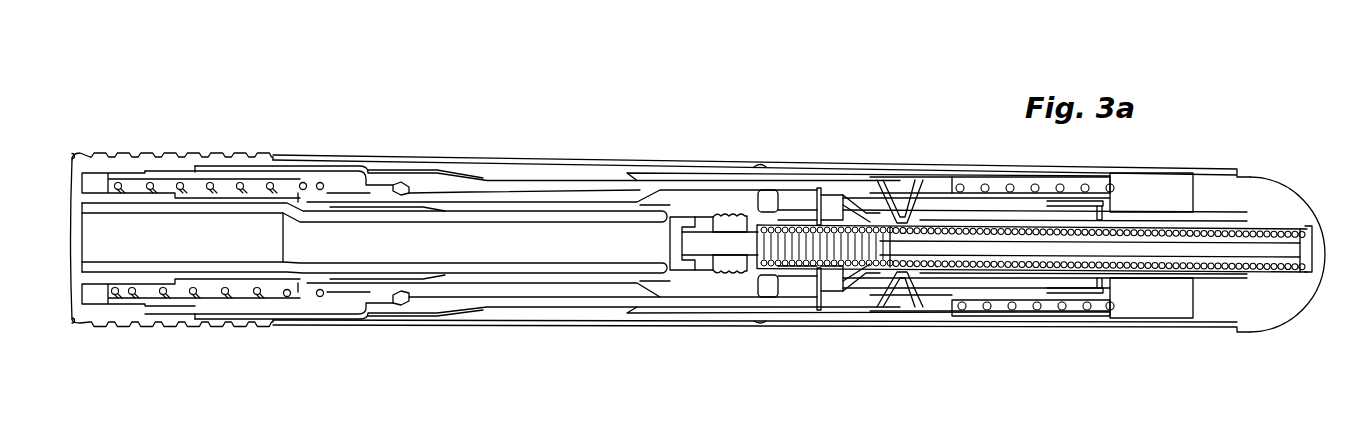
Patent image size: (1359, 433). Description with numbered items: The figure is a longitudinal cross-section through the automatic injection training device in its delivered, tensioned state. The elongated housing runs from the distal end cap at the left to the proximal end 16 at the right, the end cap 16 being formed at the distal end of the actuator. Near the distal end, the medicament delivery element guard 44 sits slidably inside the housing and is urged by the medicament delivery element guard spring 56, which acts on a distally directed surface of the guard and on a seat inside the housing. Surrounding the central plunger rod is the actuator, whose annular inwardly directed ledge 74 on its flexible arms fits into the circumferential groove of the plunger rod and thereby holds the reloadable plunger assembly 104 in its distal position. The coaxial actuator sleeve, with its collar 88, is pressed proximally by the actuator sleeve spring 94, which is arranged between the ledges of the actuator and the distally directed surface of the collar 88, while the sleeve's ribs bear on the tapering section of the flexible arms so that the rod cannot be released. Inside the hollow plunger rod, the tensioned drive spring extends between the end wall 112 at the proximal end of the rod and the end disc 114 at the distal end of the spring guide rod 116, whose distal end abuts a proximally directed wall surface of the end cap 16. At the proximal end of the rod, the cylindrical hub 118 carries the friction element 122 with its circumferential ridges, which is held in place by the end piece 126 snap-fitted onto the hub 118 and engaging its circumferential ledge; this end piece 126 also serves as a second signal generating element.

The proximal end / end cap 16 is at (1237, 172).
The medicament delivery element guard 44 is at (218, 180).
The medicament delivery element guard spring 56 is at (188, 285).
The annular inwardly directed ledge 74 is at (922, 218).
The collar 88 is at (952, 317).
The actuator sleeve spring 94 is at (1072, 312).
The reloadable plunger assembly 104 is at (895, 222).
The end wall 112 is at (755, 262).
The end disc 114 is at (1307, 233).
The spring guide rod 116 is at (1208, 248).
The cylindrical hub 118 is at (738, 240).
The friction element 122 is at (730, 267).
The end piece 126 is at (683, 217).